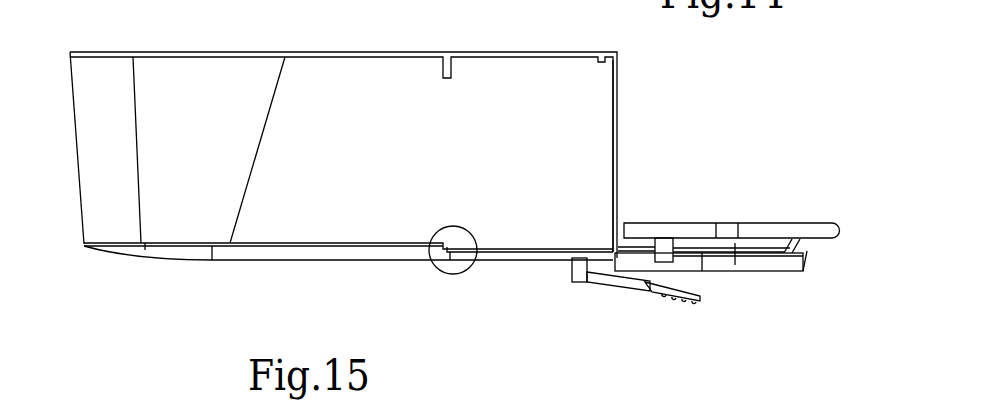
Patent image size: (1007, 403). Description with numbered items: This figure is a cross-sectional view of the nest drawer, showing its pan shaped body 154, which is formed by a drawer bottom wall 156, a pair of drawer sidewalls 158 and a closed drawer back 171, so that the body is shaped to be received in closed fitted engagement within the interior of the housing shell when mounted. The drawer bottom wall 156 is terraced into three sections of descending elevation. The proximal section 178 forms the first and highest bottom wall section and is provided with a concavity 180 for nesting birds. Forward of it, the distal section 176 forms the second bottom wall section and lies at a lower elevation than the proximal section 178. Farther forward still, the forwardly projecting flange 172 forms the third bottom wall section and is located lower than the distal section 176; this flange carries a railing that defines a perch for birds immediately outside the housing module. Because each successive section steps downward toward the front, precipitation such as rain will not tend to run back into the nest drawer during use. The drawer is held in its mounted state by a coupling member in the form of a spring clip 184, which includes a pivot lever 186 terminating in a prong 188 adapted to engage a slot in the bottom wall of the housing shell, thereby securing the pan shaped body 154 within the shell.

The pan shaped body 154 is at (835, 222).
The drawer bottom wall 156 is at (476, 266).
The drawer sidewalls 158 is at (323, 76).
The closed drawer back 171 is at (532, 402).
The forwardly projecting flange 172 is at (745, 250).
The distal section 176 is at (562, 242).
The proximal section 178 is at (287, 243).
The concavity 180 is at (187, 252).
The spring clip 184 is at (629, 296).
The pivot lever 186 is at (651, 291).
The prong 188 is at (572, 283).